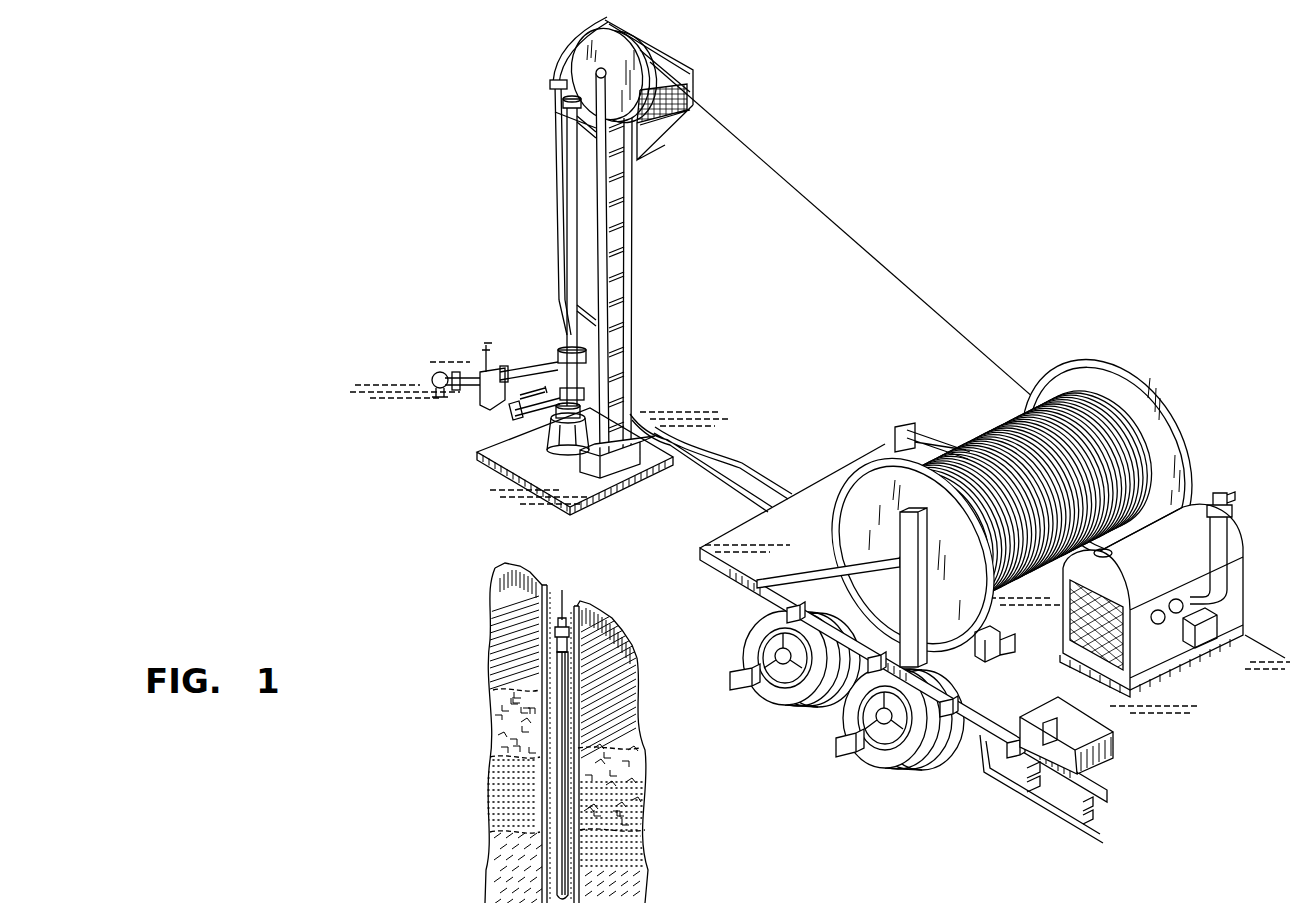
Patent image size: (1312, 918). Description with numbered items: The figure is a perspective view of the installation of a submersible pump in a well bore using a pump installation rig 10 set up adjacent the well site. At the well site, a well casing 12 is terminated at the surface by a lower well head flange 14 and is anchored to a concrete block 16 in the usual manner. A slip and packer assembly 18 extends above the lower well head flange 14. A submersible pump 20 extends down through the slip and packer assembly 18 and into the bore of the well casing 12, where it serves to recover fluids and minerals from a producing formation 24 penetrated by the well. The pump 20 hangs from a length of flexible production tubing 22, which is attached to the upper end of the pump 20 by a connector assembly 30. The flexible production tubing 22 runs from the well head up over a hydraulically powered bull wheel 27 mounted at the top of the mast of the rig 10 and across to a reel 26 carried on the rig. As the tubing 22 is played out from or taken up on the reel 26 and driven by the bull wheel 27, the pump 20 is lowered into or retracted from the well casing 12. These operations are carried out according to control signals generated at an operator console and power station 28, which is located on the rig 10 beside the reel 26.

The pump installation rig 10 is at (992, 586).
The well casing 12 is at (556, 590).
The lower well head flange 14 is at (565, 447).
The concrete block 16 is at (588, 266).
The slip and packer assembly 18 is at (549, 345).
The submersible pump 20 is at (566, 772).
The flexible production tubing 22 is at (812, 203).
The producing formation 24 is at (500, 872).
The reel 26 is at (1190, 458).
The hydraulically powered bull wheel 27 is at (580, 50).
The operator console and power station 28 is at (1234, 527).
The connector assembly 30 is at (575, 634).